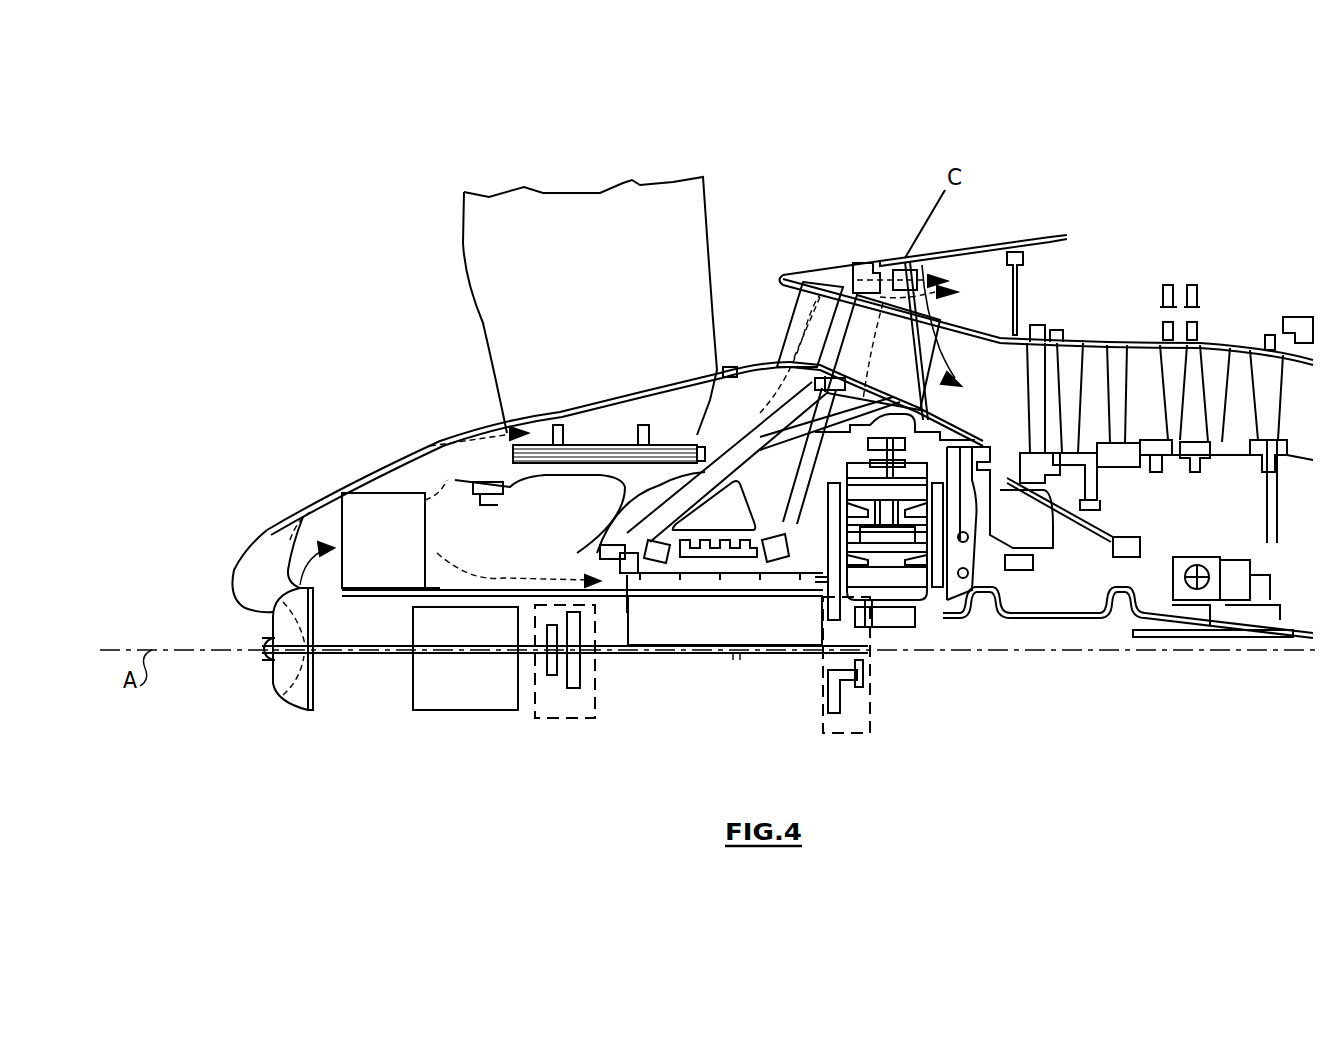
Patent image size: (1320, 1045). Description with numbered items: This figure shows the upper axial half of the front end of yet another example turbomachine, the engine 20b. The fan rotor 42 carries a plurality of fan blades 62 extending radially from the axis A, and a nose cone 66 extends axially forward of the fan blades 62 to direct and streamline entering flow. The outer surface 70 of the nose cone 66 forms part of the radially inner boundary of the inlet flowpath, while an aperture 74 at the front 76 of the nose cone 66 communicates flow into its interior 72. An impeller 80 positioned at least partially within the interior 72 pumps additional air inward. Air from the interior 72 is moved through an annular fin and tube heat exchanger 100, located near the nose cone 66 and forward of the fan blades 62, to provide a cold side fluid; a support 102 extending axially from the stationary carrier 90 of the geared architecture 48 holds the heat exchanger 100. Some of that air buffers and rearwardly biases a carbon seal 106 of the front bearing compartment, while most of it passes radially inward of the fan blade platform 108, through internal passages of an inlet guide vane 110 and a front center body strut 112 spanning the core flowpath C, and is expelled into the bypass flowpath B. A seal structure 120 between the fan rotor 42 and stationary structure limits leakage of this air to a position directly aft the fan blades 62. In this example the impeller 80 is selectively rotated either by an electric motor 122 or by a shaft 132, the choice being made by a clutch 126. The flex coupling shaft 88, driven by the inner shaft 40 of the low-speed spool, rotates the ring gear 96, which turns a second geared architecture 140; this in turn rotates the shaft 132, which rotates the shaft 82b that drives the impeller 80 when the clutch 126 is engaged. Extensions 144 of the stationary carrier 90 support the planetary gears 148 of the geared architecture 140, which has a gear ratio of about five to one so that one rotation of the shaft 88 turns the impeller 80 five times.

The engine 20b is at (1172, 258).
The inner shaft 40 is at (1217, 620).
The fan rotor 42 is at (695, 518).
The geared architecture 48 is at (945, 600).
The fan blades 62 is at (582, 307).
The nose cone 66 is at (240, 522).
The outer surface 70 is at (262, 527).
The interior 72 is at (318, 530).
The aperture 74 is at (232, 618).
The front 76 is at (232, 580).
The impeller 80 is at (313, 700).
The shaft 82b is at (360, 645).
The shaft 88 is at (1062, 606).
The stationary carrier 90 is at (830, 548).
The ring gear 96 is at (910, 608).
The heat exchanger 100 is at (372, 493).
The support 102 is at (722, 582).
The carbon seal 106 is at (615, 575).
The fan blade platform 108 is at (553, 432).
The inlet guide vane 110 is at (787, 323).
The front center body strut 112 is at (832, 318).
The seal structure 120 is at (730, 366).
The electric motor 122 is at (488, 699).
The clutch 126 is at (555, 722).
The shaft 132 is at (737, 655).
The geared architecture 140 is at (882, 740).
The extensions 144 is at (863, 667).
The gears 148 is at (862, 683).